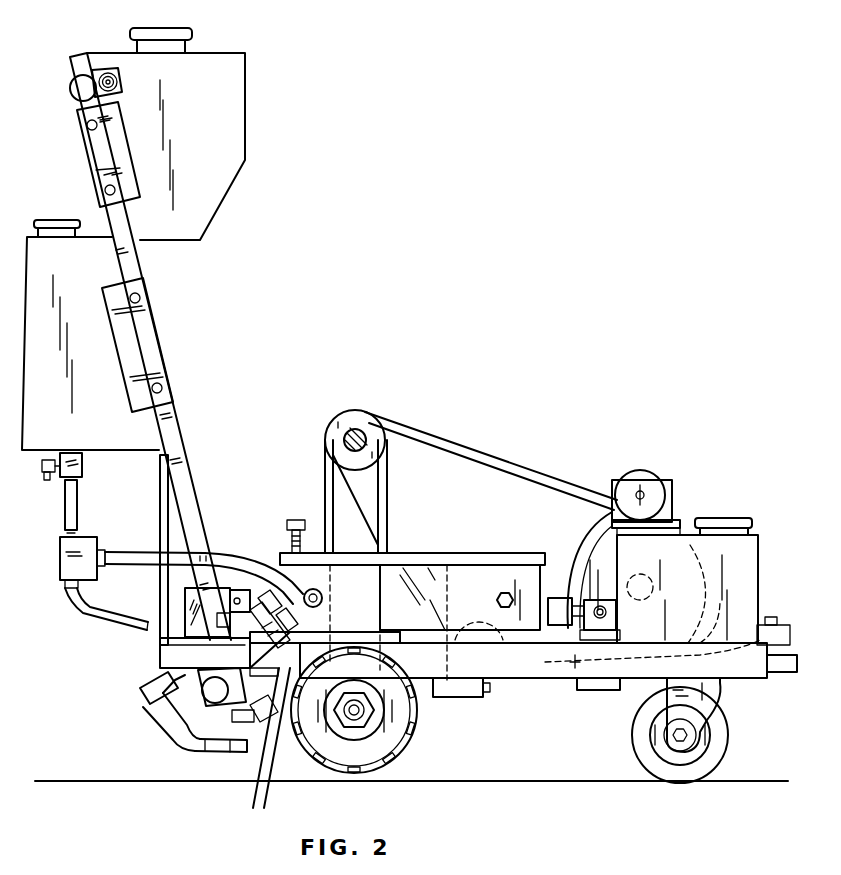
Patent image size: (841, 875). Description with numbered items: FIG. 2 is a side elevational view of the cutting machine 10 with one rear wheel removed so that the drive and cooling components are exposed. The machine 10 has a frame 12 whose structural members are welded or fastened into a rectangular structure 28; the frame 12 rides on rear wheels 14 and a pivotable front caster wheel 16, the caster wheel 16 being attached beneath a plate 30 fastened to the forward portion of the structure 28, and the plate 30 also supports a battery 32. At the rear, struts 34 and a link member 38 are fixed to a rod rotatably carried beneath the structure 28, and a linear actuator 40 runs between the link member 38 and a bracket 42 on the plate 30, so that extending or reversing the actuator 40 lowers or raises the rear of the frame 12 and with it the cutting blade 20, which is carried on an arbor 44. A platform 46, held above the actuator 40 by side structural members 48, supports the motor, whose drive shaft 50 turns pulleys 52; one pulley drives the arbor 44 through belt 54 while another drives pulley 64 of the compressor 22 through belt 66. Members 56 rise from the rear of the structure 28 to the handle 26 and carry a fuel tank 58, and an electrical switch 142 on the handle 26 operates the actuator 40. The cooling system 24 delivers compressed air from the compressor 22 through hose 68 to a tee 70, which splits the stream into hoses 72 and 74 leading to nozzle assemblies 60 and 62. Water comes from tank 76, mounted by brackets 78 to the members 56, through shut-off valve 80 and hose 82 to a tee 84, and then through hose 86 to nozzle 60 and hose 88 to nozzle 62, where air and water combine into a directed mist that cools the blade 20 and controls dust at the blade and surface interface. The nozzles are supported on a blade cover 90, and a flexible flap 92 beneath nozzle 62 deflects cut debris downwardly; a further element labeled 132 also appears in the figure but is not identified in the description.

The cutting machine 10 is at (411, 429).
The frame 12 is at (559, 686).
The rear wheels 14 is at (312, 772).
The front caster wheel 16 is at (678, 780).
The cutting blade 20 is at (376, 735).
The compressor 22 is at (672, 490).
The cooling system 24 is at (220, 729).
The handle 26 is at (80, 82).
The rectangular structure 28 is at (640, 684).
The plate 30 is at (718, 645).
The battery 32 is at (748, 580).
The struts 34 is at (205, 688).
The link member 38 is at (185, 592).
The linear actuator 40 is at (239, 588).
The bracket 42 is at (607, 605).
The arbor 44 is at (355, 722).
The platform 46 is at (475, 555).
The side structural members 48 is at (490, 575).
The drive shaft 50 is at (344, 440).
The pulleys 52 is at (338, 423).
The belt 54 is at (388, 487).
The members 56 is at (172, 432).
The fuel tank 58 is at (233, 117).
The nozzle assembly 60 is at (287, 607).
The second nozzle assembly 62 is at (238, 764).
The compressor pulley 64 is at (597, 540).
The belt 66 is at (505, 467).
The air hose 68 is at (165, 676).
The tee 70 is at (140, 693).
The air hose 72 is at (140, 702).
The air hose 74 is at (200, 758).
The water tank 76 is at (78, 392).
The brackets 78 is at (148, 343).
The shut-off valve 80 is at (82, 472).
The water hose 82 is at (66, 505).
The tee 84 is at (86, 547).
The water hose 86 is at (210, 552).
The water hose 88 is at (78, 614).
The blade cover 90 is at (383, 628).
The flexible flap 92 is at (266, 790).
The bracket 132 is at (214, 677).
The electrical switch 142 is at (108, 74).